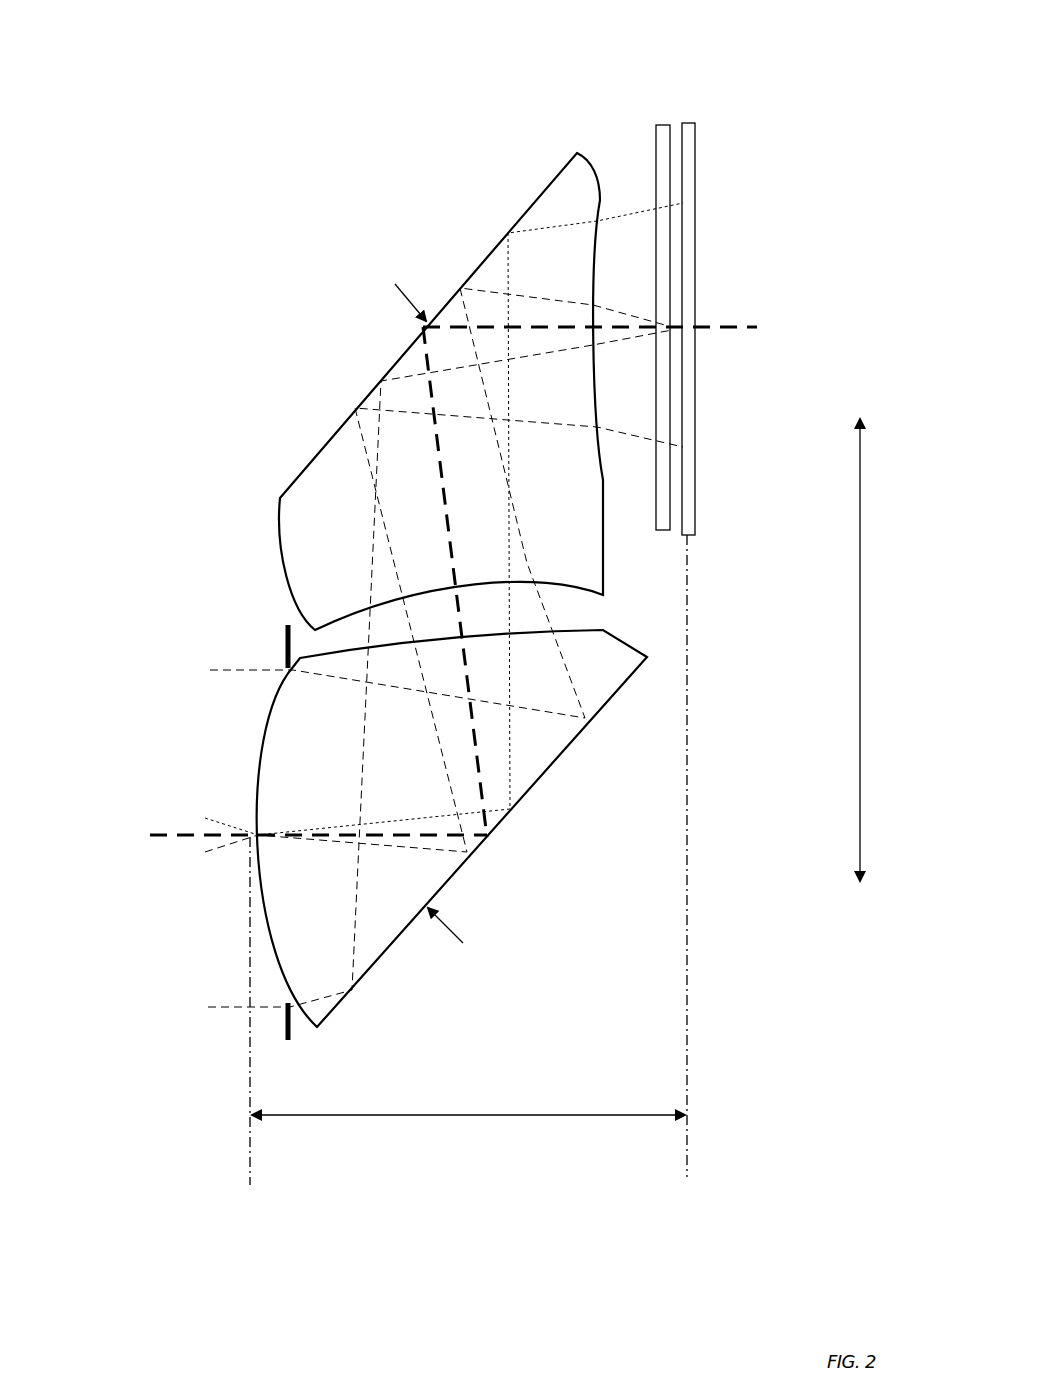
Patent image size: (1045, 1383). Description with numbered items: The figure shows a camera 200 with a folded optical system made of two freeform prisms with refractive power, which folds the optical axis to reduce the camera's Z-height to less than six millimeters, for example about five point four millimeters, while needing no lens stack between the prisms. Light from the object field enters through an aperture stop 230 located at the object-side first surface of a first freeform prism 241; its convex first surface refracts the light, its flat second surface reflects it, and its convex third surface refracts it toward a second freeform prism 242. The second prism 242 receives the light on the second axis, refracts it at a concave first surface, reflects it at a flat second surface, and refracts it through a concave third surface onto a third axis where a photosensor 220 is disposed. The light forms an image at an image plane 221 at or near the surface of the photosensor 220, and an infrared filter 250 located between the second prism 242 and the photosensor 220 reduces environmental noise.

The camera 200 is at (130, 67).
The photosensor 220 is at (698, 132).
The image plane 221 is at (684, 123).
The aperture stop 230 is at (287, 626).
The first freeform prism 241 is at (323, 952).
The second freeform prism 242 is at (337, 562).
The infrared (IR) filter 250 is at (656, 132).